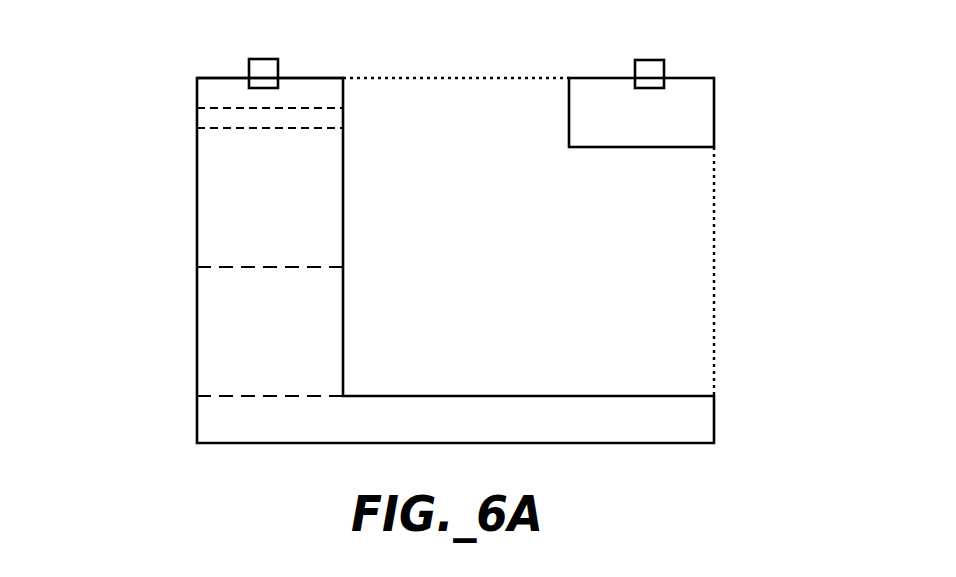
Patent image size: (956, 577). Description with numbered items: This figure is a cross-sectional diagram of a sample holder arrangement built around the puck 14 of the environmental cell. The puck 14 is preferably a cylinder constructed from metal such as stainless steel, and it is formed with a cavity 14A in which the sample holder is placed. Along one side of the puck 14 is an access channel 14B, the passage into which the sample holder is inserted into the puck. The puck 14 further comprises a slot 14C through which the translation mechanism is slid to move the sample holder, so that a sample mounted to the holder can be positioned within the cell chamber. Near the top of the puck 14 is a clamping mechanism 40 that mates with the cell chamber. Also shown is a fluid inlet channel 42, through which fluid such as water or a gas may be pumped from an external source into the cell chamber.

The puck 14 is at (143, 59).
The cavity 14A is at (428, 59).
The access channel 14B is at (700, 289).
The slot 14C is at (210, 337).
The clamping mechanism 40 is at (650, 70).
The fluid inlet channel 42 is at (207, 113).